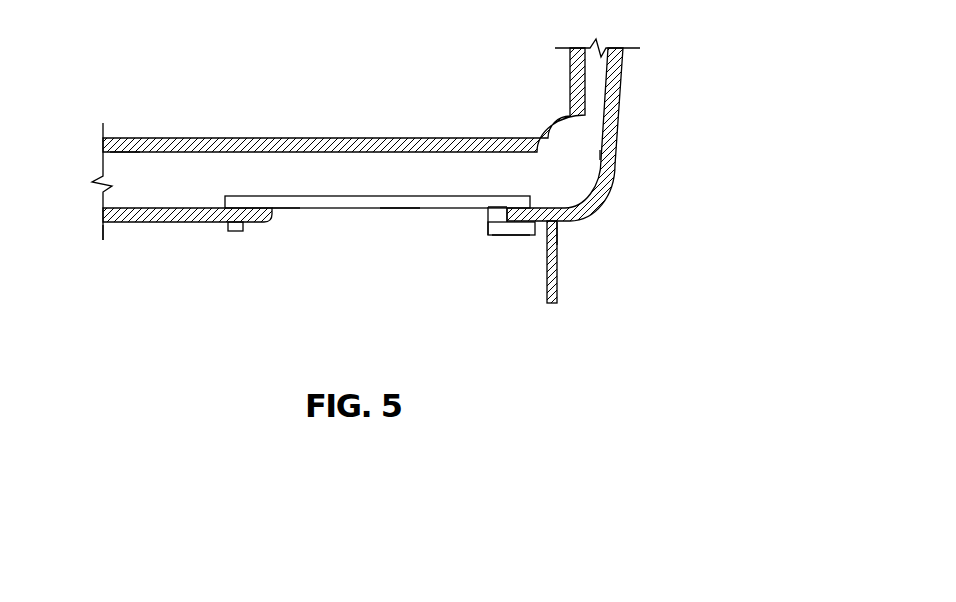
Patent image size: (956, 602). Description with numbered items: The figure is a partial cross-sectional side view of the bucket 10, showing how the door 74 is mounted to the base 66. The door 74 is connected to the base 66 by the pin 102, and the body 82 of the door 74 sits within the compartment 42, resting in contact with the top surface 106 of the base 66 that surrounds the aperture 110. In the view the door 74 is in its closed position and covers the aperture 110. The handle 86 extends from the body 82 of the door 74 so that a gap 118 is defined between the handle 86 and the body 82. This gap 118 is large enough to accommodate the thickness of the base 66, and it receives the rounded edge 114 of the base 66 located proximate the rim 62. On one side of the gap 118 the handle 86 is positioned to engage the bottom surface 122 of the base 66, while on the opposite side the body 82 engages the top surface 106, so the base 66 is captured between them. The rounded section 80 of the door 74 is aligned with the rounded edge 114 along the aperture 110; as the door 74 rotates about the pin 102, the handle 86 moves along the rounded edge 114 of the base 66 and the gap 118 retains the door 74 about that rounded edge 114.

The bucket 10 is at (118, 246).
The compartment 42 is at (198, 172).
The rim 62 is at (557, 267).
The base 66 is at (157, 223).
The door 74 is at (307, 213).
The rounded section 80 is at (527, 197).
The body 82 is at (377, 202).
The handle 86 is at (500, 235).
The pin 102 is at (233, 231).
The top surface 106 is at (181, 208).
The aperture 110 is at (398, 219).
The rounded edge 114 is at (512, 222).
The gap 118 is at (507, 235).
The bottom surface 122 is at (557, 243).